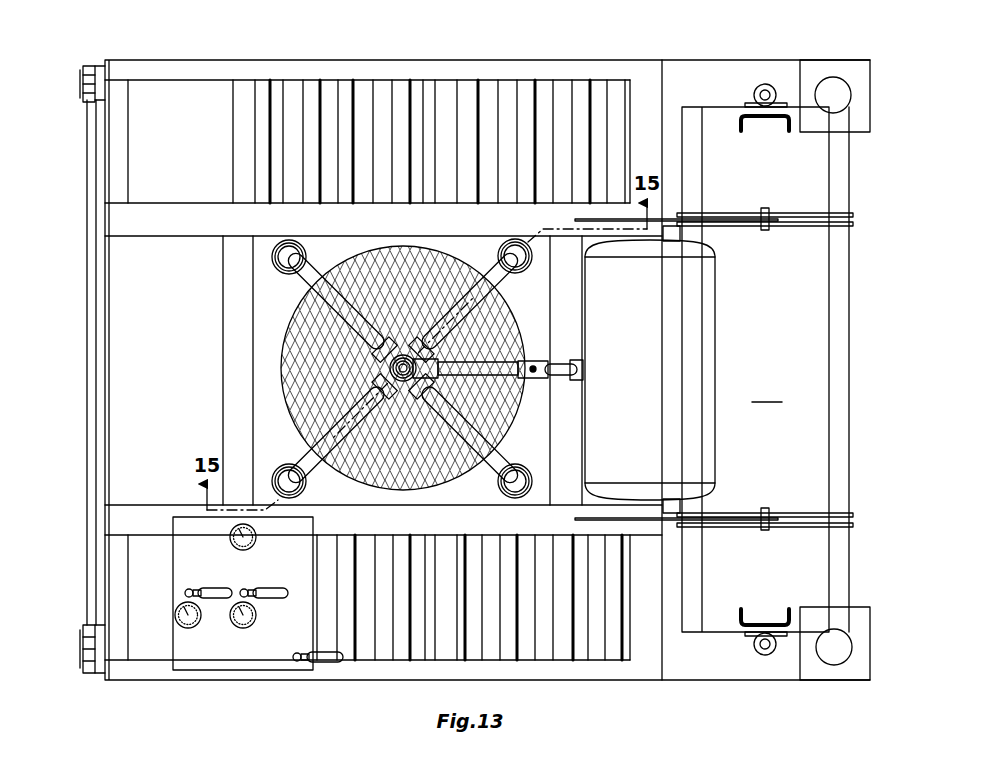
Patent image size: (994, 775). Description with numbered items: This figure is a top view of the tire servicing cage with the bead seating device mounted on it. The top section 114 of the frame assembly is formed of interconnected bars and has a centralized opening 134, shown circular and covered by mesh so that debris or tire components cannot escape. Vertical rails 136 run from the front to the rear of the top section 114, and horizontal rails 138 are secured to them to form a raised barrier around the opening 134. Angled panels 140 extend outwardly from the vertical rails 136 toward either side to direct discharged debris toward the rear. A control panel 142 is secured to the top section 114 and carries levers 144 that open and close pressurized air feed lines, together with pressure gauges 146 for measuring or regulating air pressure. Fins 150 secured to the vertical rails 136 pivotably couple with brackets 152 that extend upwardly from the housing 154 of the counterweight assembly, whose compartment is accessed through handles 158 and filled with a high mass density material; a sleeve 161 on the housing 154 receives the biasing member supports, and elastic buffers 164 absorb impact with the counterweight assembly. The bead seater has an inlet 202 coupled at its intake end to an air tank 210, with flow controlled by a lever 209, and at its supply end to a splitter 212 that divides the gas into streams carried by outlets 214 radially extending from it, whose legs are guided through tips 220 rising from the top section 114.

The top section 114 is at (162, 97).
The centralized opening 134 is at (282, 348).
The vertical rails 136 is at (115, 220).
The horizontal rails 138 is at (230, 263).
The panels 140 is at (545, 92).
The control panel 142 is at (196, 661).
The levers 144 is at (328, 661).
The pressure gauges 146 is at (243, 629).
The fins 150 is at (668, 238).
The brackets 152 is at (840, 227).
The housing 154 is at (765, 369).
The handles 158 is at (740, 120).
The sleeve 161 is at (766, 83).
The buffers 164 is at (834, 86).
The inlet 202 is at (493, 365).
The lever 209 is at (562, 356).
The air tank 210 is at (710, 330).
The splitter 212 is at (403, 352).
The outlets 214 is at (302, 288).
The tips 220 is at (282, 272).